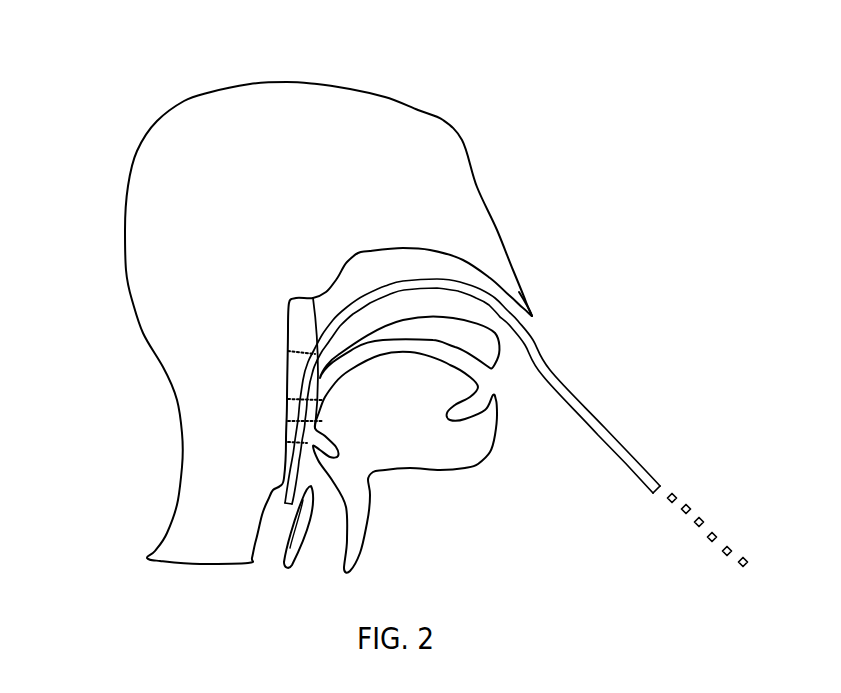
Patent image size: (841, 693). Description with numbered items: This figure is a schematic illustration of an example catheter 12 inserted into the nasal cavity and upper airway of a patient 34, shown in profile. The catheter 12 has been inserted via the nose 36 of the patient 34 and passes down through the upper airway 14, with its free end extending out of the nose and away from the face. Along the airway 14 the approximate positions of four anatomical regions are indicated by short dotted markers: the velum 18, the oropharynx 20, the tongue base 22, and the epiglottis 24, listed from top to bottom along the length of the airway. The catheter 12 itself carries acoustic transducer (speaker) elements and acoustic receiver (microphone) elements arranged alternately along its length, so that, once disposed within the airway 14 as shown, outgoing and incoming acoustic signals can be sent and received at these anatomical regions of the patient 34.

The patient 34 is at (112, 78).
The upper airway 14 is at (309, 308).
The catheter 12 is at (542, 364).
The nose 36 is at (534, 333).
The velum 18 is at (275, 343).
The oropharynx 20 is at (274, 391).
The tongue base 22 is at (274, 414).
The epiglottis 24 is at (275, 435).